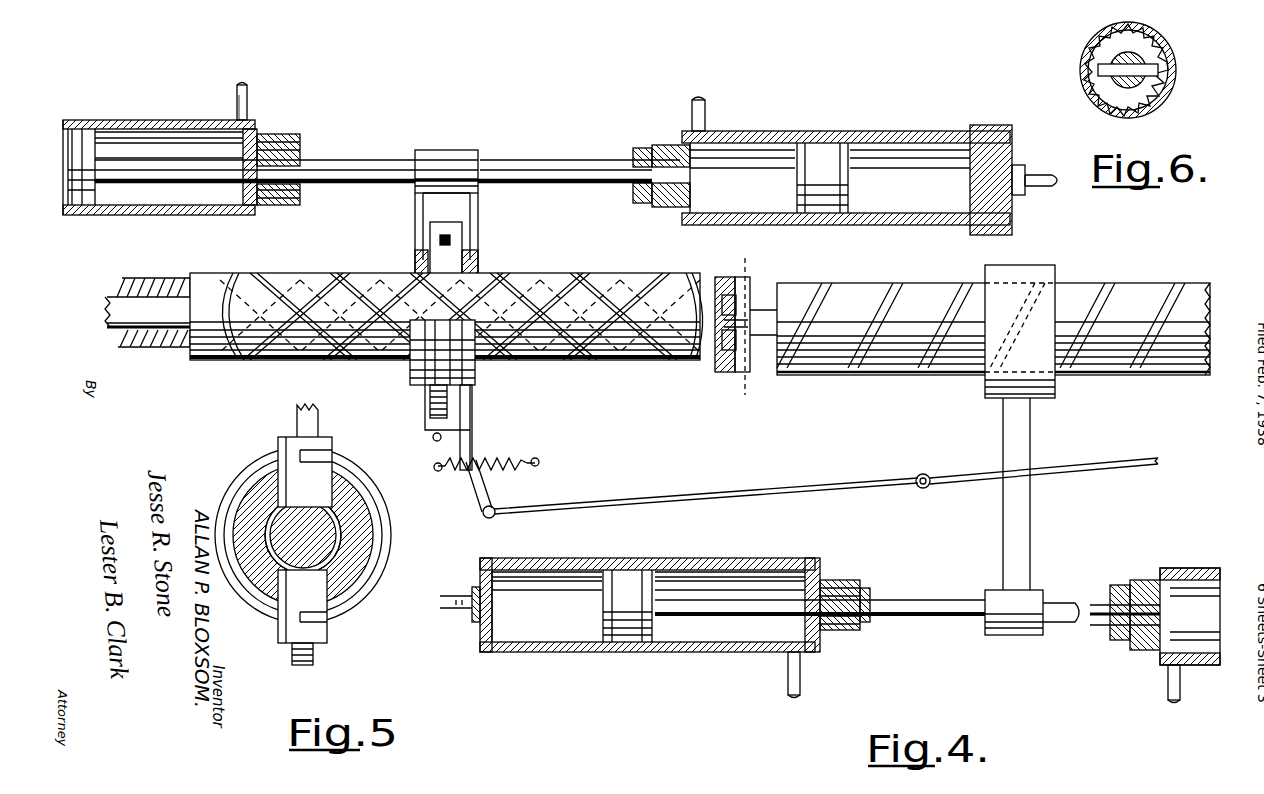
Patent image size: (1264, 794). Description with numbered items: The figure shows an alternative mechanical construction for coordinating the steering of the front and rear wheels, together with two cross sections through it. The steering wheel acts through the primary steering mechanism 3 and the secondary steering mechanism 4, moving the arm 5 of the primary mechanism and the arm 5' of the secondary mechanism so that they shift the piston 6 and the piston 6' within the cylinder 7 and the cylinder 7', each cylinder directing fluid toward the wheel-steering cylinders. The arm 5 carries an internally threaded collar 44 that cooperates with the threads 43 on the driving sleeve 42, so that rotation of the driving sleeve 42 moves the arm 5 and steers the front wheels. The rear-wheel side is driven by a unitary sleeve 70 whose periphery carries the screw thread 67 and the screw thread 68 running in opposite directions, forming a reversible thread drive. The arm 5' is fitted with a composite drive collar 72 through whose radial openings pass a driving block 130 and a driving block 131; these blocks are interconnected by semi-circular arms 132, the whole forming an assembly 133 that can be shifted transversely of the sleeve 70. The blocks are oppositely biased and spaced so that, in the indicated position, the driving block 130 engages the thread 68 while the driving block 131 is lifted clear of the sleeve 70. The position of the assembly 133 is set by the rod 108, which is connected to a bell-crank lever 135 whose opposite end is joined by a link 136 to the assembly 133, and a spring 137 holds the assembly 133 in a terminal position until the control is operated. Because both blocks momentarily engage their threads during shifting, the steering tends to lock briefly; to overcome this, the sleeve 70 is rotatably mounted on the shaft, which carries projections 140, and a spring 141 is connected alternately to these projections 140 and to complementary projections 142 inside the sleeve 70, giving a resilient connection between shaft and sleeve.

In FIG. 4, the primary steering mechanism 3 is at (1098, 283).
In FIG. 4, the secondary steering mechanism 4 is at (395, 150).
In FIG. 4, the arm 5 is at (728, 415).
In FIG. 4, the arm 5' is at (465, 234).
In FIG. 4, the piston 6 is at (690, 445).
In FIG. 4, the piston 6' is at (458, 148).
In FIG. 4, the cylinder 7 is at (830, 612).
In FIG. 4, the cylinder 7' is at (560, 159).
In FIG. 4, the driving sleeve 42 is at (818, 375).
In FIG. 4, the threads 43 is at (918, 375).
In FIG. 4, the collar 44 is at (1055, 390).
In FIG. 4, the screw thread 67 is at (340, 290).
In FIG. 4, the screw thread 68 is at (388, 290).
In FIG. 5, the screw thread 68 is at (345, 535).
In FIG. 4, the sleeve 70 is at (590, 365).
In FIG. 4, the composite drive collar 72 is at (482, 262).
In FIG. 5, the composite drive collar 72 is at (252, 500).
In FIG. 4, the rod 108 is at (958, 478).
In FIG. 5, the driving block 130 is at (290, 455).
In FIG. 5, the driving block 131 is at (290, 627).
In FIG. 5, the semi-circular arms 132 is at (388, 512).
In FIG. 4, the assembly 133 is at (470, 404).
In FIG. 5, the assembly 133 is at (350, 460).
In FIG. 4, the bell-crank lever 135 is at (492, 497).
In FIG. 4, the link 136 is at (432, 436).
In FIG. 5, the link 136 is at (300, 661).
In FIG. 4, the spring 137 is at (497, 460).
In FIG. 6, the projections 140 is at (1160, 75).
In FIG. 6, the spring 141 is at (1160, 100).
In FIG. 6, the projections 142 is at (1108, 100).